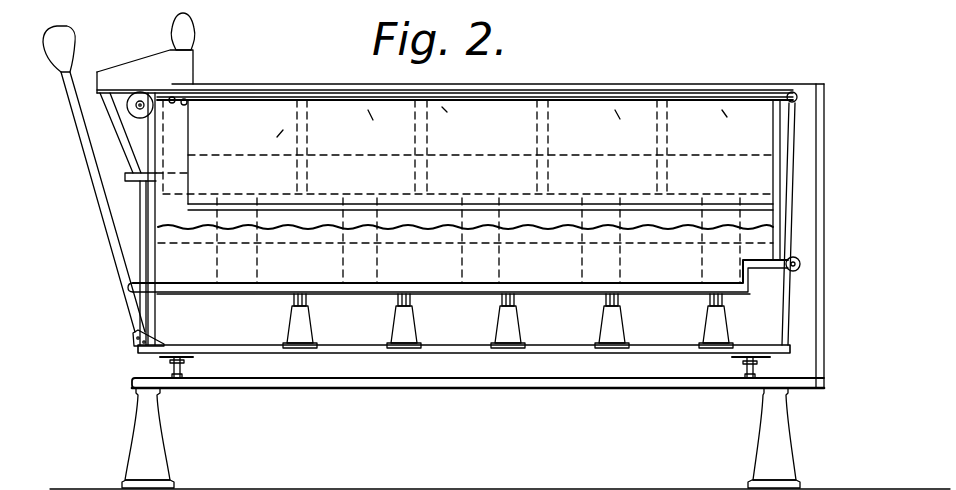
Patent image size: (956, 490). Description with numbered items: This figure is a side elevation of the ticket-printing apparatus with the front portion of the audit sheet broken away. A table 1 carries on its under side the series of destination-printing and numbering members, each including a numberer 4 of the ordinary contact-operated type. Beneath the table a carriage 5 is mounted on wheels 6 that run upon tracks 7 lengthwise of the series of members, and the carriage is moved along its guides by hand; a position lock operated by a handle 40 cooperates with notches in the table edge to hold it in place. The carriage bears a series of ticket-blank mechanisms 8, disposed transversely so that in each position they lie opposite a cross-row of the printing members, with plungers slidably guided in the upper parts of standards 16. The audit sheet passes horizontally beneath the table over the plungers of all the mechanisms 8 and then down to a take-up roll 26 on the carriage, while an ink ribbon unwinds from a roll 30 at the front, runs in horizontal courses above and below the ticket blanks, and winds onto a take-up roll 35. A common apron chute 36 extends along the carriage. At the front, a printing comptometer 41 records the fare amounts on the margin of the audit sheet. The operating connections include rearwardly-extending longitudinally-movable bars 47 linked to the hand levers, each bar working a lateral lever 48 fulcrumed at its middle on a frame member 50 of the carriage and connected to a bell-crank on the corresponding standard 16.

The table 1 is at (507, 83).
The numberer 4 is at (93, 187).
The carriage 5 is at (279, 349).
The wheels 6 is at (172, 367).
The tracks 7 is at (182, 377).
The ticket-blank mechanisms 8 is at (420, 83).
The standards 16 is at (345, 263).
The take-up roll 26 is at (195, 266).
The ink ribbon roll 30 is at (139, 118).
The take-up roll 35 is at (799, 272).
The common apron chute 36 is at (255, 118).
The handle 40 is at (189, 23).
The adding machine or printing comptometer 41 is at (194, 71).
The longitudinally-movable bar 47 is at (598, 294).
The lever 48 is at (292, 302).
The frame member 50 is at (309, 332).